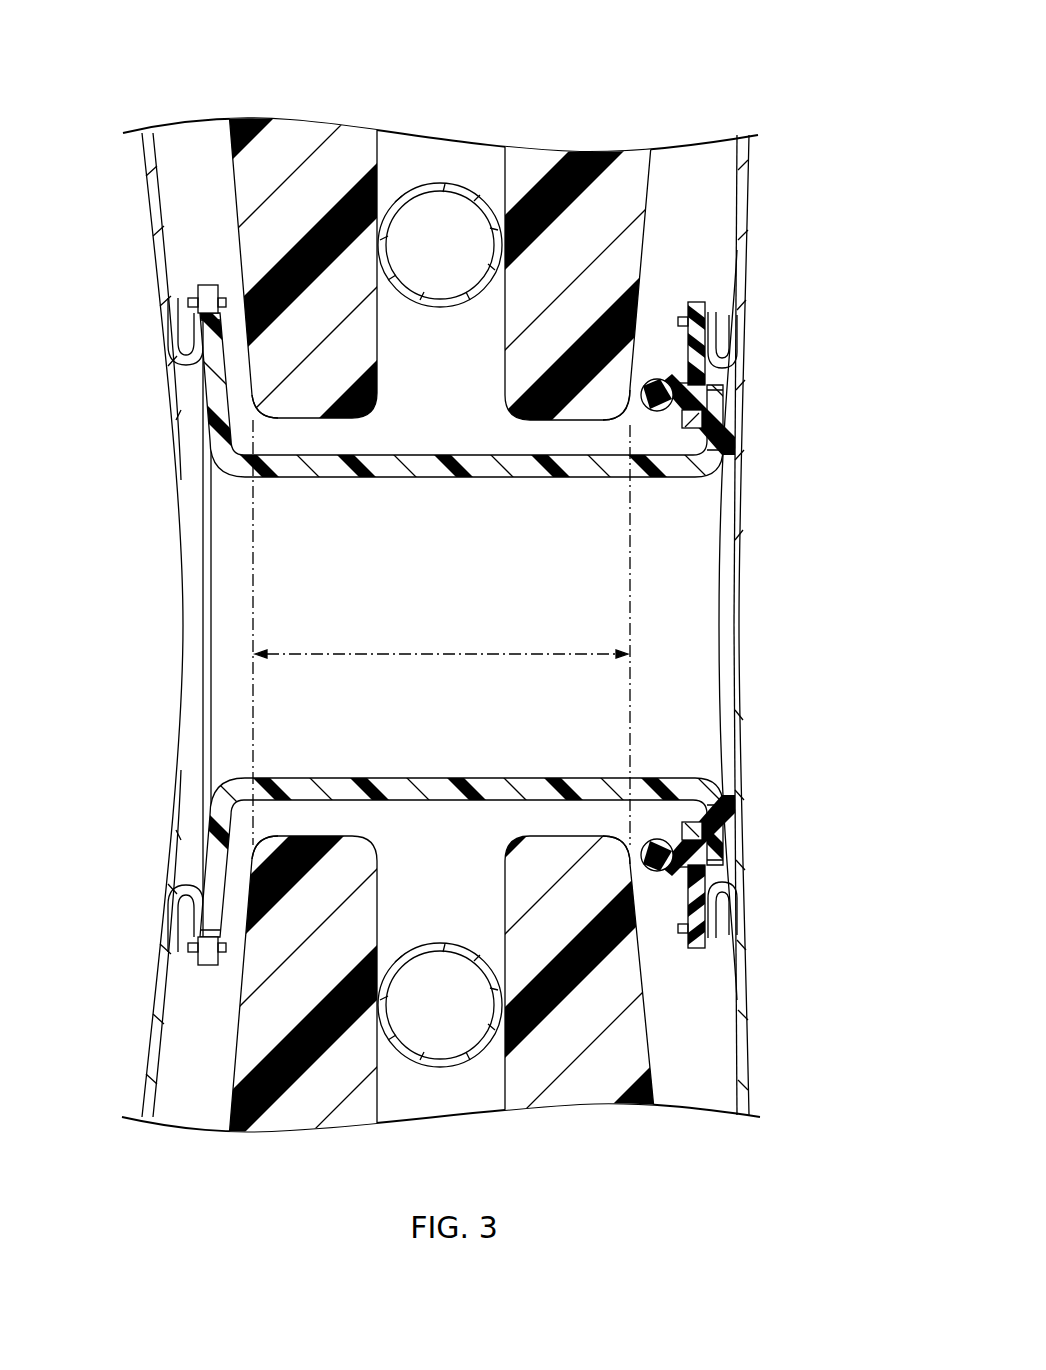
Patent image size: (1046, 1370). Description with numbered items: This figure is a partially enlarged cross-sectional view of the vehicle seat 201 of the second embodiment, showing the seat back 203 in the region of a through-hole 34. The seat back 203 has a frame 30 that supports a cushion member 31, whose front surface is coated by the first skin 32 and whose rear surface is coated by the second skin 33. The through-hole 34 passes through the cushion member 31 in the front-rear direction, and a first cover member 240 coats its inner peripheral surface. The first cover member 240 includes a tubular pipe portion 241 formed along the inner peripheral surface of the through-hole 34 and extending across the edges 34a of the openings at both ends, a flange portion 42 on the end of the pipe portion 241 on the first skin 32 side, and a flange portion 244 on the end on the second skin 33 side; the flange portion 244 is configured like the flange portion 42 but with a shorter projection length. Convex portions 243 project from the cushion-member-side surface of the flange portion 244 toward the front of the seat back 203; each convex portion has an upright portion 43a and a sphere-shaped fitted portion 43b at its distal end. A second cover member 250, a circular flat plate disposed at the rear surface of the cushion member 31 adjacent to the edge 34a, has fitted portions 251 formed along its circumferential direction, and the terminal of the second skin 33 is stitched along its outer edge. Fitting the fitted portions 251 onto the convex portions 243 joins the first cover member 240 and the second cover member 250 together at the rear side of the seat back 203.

The vehicle seat 201 is at (806, 76).
The seat back 203 is at (805, 258).
The frame 30 is at (440, 186).
The cushion member 31 is at (300, 135).
The first skin 32 is at (150, 228).
The second skin 33 is at (745, 184).
The through-hole 34 is at (450, 648).
The edge of opening 34a is at (263, 421).
The flange portion 42 is at (217, 400).
The upright portion 43a is at (693, 432).
The fitted portion 43b is at (665, 412).
The first cover member 240 is at (150, 597).
The pipe portion 241 is at (423, 472).
The convex portion 243 is at (665, 356).
The flange portion 244 is at (720, 386).
The second cover member 250 is at (699, 282).
The fitted portion 251 is at (705, 396).